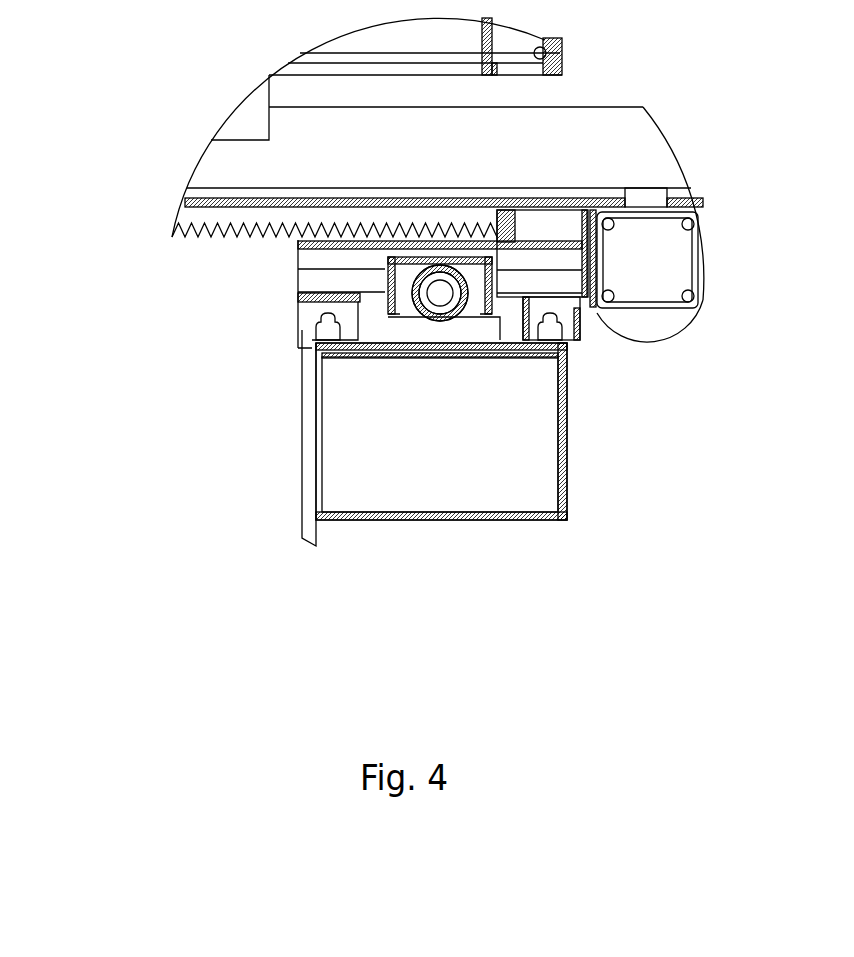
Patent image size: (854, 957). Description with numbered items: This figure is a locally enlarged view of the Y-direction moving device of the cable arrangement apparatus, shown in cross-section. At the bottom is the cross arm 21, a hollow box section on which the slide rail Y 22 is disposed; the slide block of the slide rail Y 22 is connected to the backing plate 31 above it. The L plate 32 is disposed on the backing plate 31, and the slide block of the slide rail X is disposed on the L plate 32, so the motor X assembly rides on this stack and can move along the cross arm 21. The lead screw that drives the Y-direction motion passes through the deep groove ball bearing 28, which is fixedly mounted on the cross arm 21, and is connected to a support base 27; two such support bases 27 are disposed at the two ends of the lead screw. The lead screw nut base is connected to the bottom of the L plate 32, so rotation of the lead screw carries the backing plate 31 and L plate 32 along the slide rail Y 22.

The cross arm 21 is at (500, 500).
The slide rail Y 22 is at (322, 328).
The support base 27 is at (488, 332).
The deep groove ball bearing 28 is at (432, 305).
The backing plate 31 is at (317, 285).
The L plate 32 is at (317, 261).